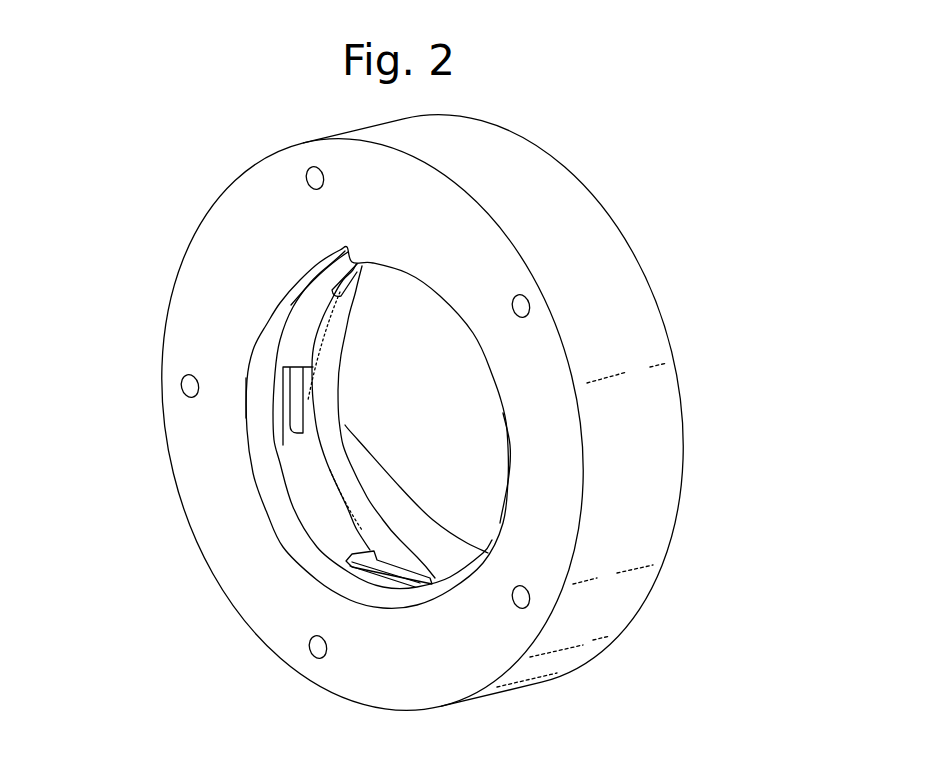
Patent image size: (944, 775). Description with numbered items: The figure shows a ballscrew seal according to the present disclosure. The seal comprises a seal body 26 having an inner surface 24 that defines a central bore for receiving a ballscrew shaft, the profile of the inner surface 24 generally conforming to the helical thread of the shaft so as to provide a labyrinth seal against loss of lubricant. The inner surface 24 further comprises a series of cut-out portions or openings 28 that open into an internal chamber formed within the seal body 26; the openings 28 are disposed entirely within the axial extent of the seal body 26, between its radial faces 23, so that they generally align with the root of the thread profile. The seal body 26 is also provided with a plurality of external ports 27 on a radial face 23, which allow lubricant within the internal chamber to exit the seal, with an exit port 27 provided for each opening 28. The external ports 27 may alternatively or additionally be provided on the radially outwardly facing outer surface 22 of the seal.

The outer surface 22 is at (643, 437).
The radial face 23 is at (192, 296).
The inner surface 24 is at (312, 552).
The seal body 26 is at (686, 268).
The external port 27 is at (303, 172).
The opening 28 is at (300, 414).